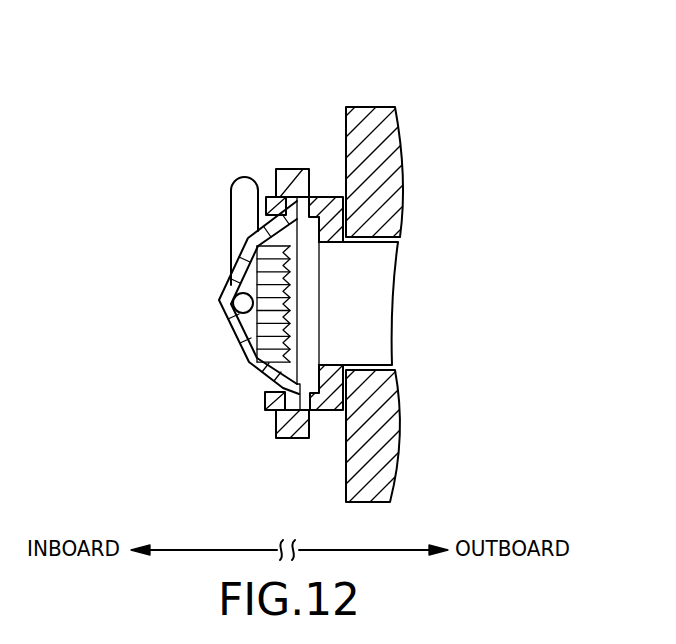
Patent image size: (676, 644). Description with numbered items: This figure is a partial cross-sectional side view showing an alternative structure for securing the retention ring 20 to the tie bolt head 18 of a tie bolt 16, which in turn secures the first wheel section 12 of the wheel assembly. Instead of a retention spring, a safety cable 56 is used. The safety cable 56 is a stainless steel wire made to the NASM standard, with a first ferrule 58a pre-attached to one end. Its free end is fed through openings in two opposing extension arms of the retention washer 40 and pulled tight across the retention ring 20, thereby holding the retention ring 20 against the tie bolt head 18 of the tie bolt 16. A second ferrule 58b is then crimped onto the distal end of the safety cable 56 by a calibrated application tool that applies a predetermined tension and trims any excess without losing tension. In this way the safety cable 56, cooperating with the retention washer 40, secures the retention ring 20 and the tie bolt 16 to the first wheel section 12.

The first wheel section 12 is at (400, 433).
The tie bolt 16 is at (394, 306).
The tie bolt head 18 is at (254, 370).
The retention ring 20 is at (243, 177).
The retention washer 40 is at (326, 197).
The safety cable 56 is at (232, 338).
The first ferrule 58a is at (288, 168).
The second ferrule 58b is at (290, 440).